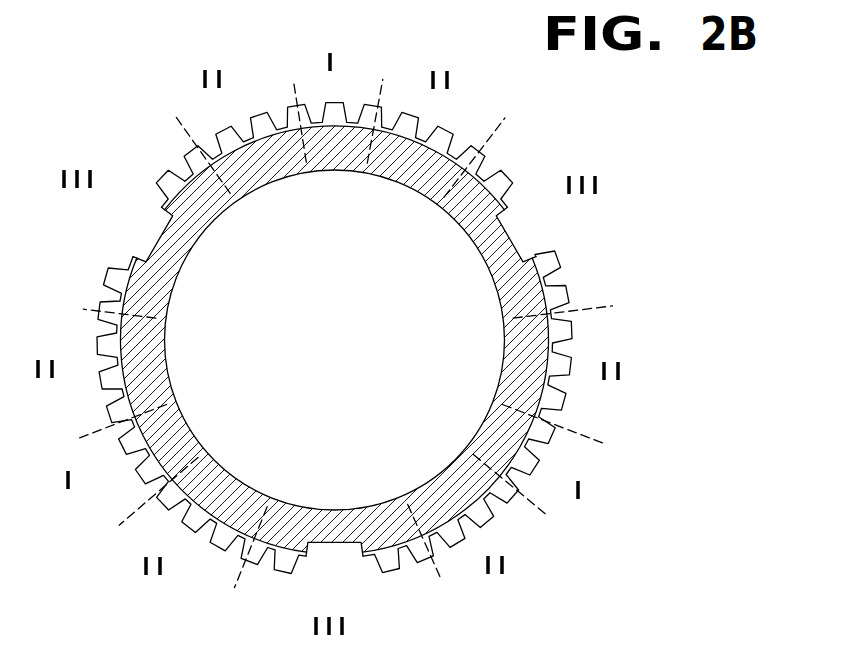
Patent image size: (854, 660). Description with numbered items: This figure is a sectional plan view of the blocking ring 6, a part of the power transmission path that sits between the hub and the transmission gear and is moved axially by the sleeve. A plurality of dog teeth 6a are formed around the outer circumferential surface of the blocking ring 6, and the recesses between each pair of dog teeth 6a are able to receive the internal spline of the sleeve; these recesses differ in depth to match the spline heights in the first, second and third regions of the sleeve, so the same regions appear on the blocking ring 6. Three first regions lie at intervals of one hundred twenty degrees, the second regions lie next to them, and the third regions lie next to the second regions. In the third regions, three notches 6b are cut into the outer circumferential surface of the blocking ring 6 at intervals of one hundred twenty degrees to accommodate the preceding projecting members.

The blocking ring 6 is at (146, 114).
The dog tooth 6a is at (405, 104).
The notch 6b is at (150, 259).